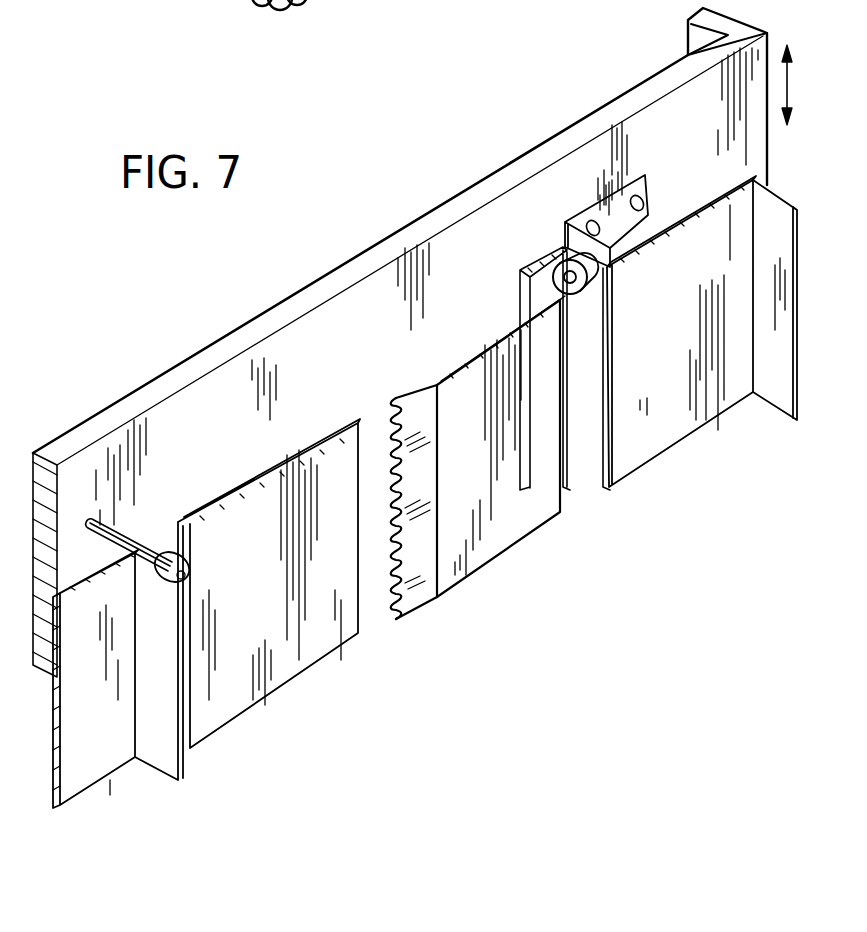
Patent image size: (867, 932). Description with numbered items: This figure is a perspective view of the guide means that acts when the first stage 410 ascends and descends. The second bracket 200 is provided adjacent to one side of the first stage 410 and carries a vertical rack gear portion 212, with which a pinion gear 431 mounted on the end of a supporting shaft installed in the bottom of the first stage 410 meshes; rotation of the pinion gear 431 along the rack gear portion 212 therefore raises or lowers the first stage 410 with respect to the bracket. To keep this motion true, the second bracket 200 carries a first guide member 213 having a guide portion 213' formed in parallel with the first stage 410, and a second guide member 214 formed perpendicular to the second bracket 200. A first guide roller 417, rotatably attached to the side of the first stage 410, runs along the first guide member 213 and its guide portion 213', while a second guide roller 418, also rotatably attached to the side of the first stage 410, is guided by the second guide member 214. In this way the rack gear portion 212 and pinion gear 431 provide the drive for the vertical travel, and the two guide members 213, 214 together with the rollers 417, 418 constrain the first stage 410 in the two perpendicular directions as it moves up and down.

The second bracket 200 is at (522, 558).
The rack gear portion 212 is at (390, 612).
The first guide member 213 is at (527, 333).
The guide portion 213' is at (594, 169).
The second guide member 214 is at (180, 745).
The first stage 410 is at (483, 190).
The first guide roller 417 is at (582, 286).
The second guide roller 418 is at (193, 565).
The pinion gear 431 is at (338, 0).